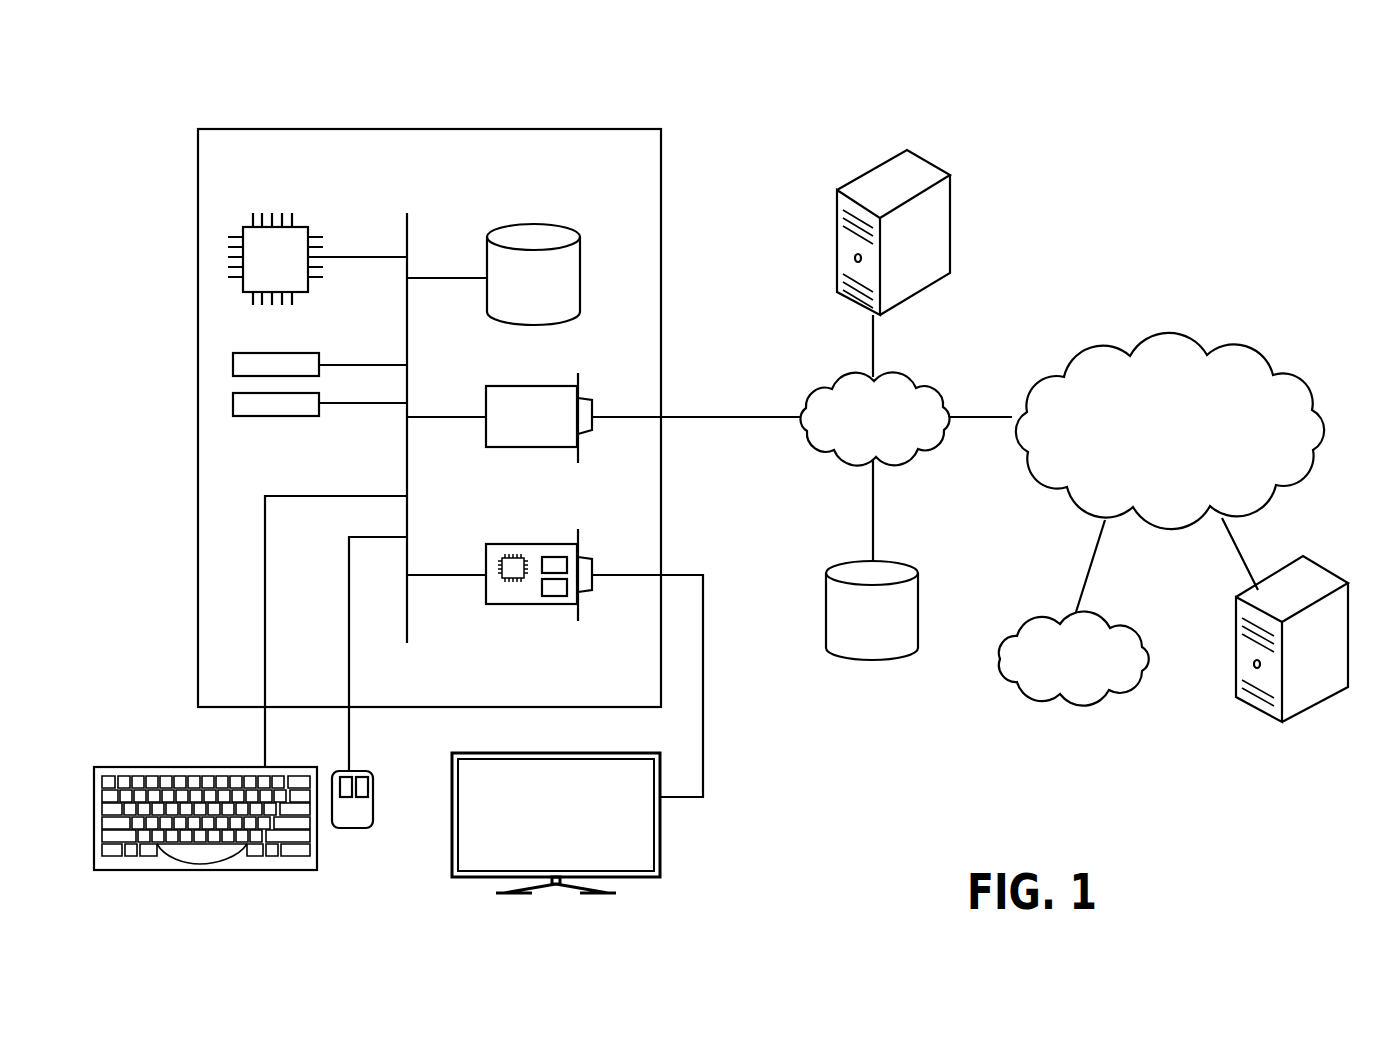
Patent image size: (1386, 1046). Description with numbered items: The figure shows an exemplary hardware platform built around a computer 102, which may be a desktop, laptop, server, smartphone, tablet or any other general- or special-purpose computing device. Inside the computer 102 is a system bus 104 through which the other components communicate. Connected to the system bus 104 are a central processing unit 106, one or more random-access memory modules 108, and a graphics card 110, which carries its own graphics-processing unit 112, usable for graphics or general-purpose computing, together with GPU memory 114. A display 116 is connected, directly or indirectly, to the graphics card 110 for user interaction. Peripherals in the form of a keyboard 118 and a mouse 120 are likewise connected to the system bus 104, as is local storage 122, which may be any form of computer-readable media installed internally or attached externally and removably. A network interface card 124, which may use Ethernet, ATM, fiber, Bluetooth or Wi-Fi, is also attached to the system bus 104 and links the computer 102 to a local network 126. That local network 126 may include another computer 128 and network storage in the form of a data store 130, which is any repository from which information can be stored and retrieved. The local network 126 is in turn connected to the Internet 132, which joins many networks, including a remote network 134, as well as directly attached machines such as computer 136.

The computer 102 is at (612, 129).
The system bus 104 is at (407, 227).
The central processing unit (CPU) 106 is at (301, 219).
The random-access memory (RAM) modules 108 is at (321, 363).
The graphics card 110 is at (484, 558).
The graphics-processing unit (GPU) 112 is at (513, 582).
The GPU memory 114 is at (552, 596).
The display 116 is at (660, 855).
The keyboard 118 is at (208, 870).
The mouse 120 is at (348, 828).
The local storage 122 is at (580, 258).
The network interface card (NIC) 124 is at (482, 398).
The local network 126 is at (935, 370).
The computer 128 is at (930, 160).
The data store 130 is at (908, 563).
The Internet 132 is at (1220, 330).
The remote network 134 is at (1130, 610).
The computer 136 is at (1320, 560).